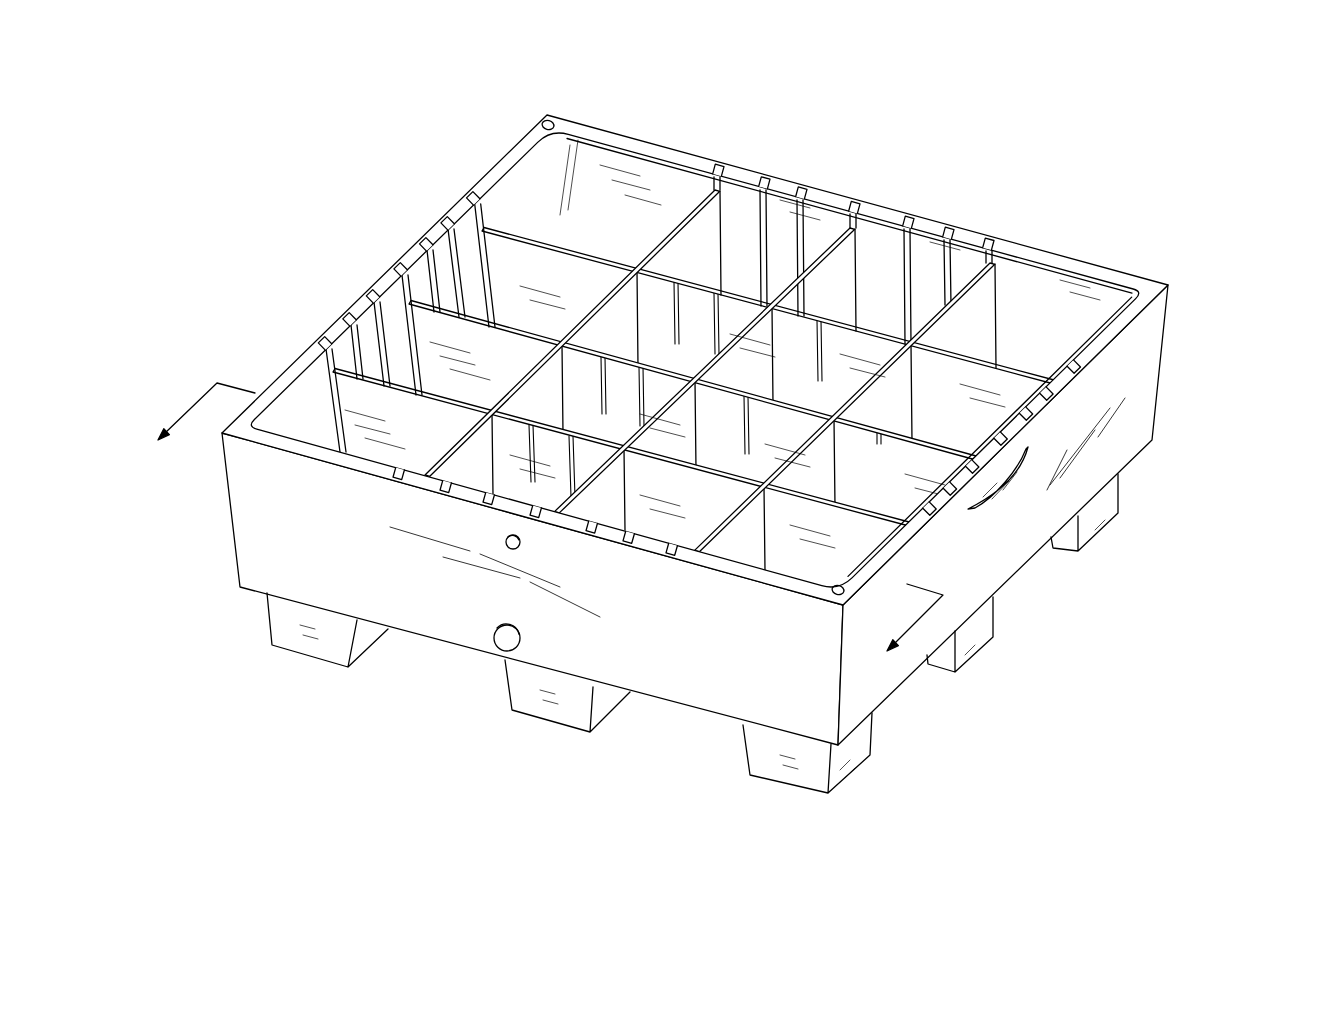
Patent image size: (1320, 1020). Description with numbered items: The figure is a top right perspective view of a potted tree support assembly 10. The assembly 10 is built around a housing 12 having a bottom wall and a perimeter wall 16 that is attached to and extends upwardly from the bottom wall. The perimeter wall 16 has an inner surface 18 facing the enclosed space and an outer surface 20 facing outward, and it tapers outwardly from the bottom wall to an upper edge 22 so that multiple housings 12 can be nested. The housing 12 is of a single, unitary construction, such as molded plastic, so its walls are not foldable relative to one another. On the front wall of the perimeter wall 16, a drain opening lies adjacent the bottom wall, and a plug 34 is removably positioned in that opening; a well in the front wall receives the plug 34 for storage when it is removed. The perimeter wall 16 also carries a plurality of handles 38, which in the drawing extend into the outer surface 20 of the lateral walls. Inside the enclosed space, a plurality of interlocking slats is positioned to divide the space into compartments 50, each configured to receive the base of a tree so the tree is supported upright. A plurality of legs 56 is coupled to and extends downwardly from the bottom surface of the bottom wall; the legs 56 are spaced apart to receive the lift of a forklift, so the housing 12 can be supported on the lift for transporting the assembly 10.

The potted tree support assembly 10 is at (1084, 184).
The housing 12 is at (703, 430).
The perimeter wall 16 is at (1170, 322).
The inner surface 18 is at (608, 196).
The outer surface 20 is at (263, 502).
The upper edge 22 is at (1156, 280).
The plug 34 is at (504, 651).
The handles 38 is at (1003, 497).
The compartments 50 is at (788, 208).
The legs 56 is at (608, 715).